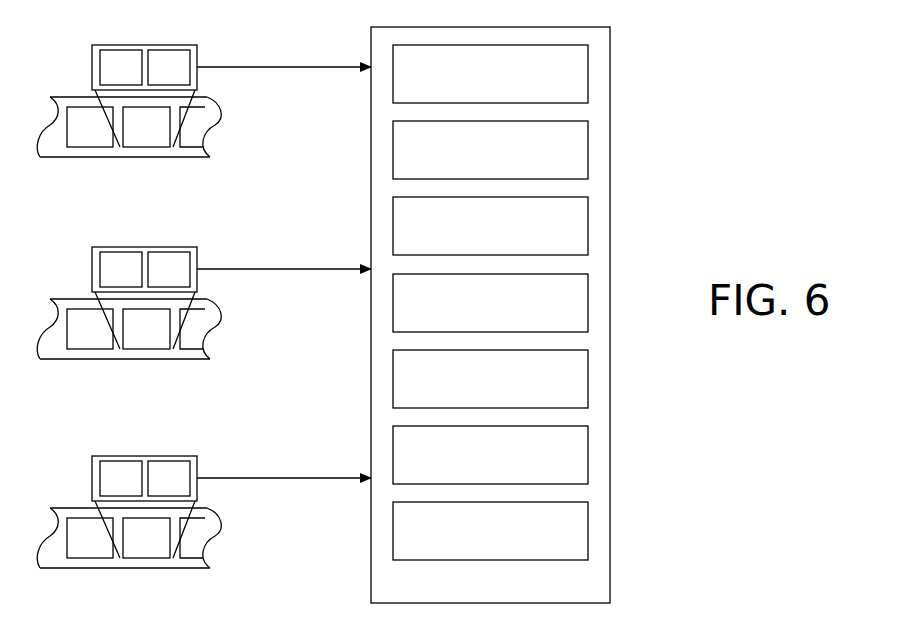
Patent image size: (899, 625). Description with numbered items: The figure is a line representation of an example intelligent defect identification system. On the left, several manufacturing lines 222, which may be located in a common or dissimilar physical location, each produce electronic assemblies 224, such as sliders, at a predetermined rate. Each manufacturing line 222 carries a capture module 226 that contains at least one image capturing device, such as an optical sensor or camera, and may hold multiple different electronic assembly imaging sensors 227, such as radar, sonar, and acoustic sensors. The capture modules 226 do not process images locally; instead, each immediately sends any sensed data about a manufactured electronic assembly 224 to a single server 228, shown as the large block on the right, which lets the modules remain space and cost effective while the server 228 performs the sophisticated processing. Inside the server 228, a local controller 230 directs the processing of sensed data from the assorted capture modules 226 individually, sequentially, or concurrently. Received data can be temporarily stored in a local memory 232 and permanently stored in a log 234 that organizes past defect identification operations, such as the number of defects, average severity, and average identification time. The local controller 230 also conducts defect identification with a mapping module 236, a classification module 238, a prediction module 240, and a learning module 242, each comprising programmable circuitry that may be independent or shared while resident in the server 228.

The manufacturing line 222 is at (70, 93).
The electronic assembly 224 is at (98, 149).
The capture module 226 is at (197, 83).
The electronic assembly imaging sensor 227 is at (112, 60).
The server 228 is at (471, 597).
The local controller 230 is at (471, 86).
The local memory 232 is at (471, 162).
The log 234 is at (471, 238).
The mapping module 236 is at (471, 315).
The classification module 238 is at (471, 391).
The prediction module 240 is at (471, 467).
The learning module 242 is at (471, 543).